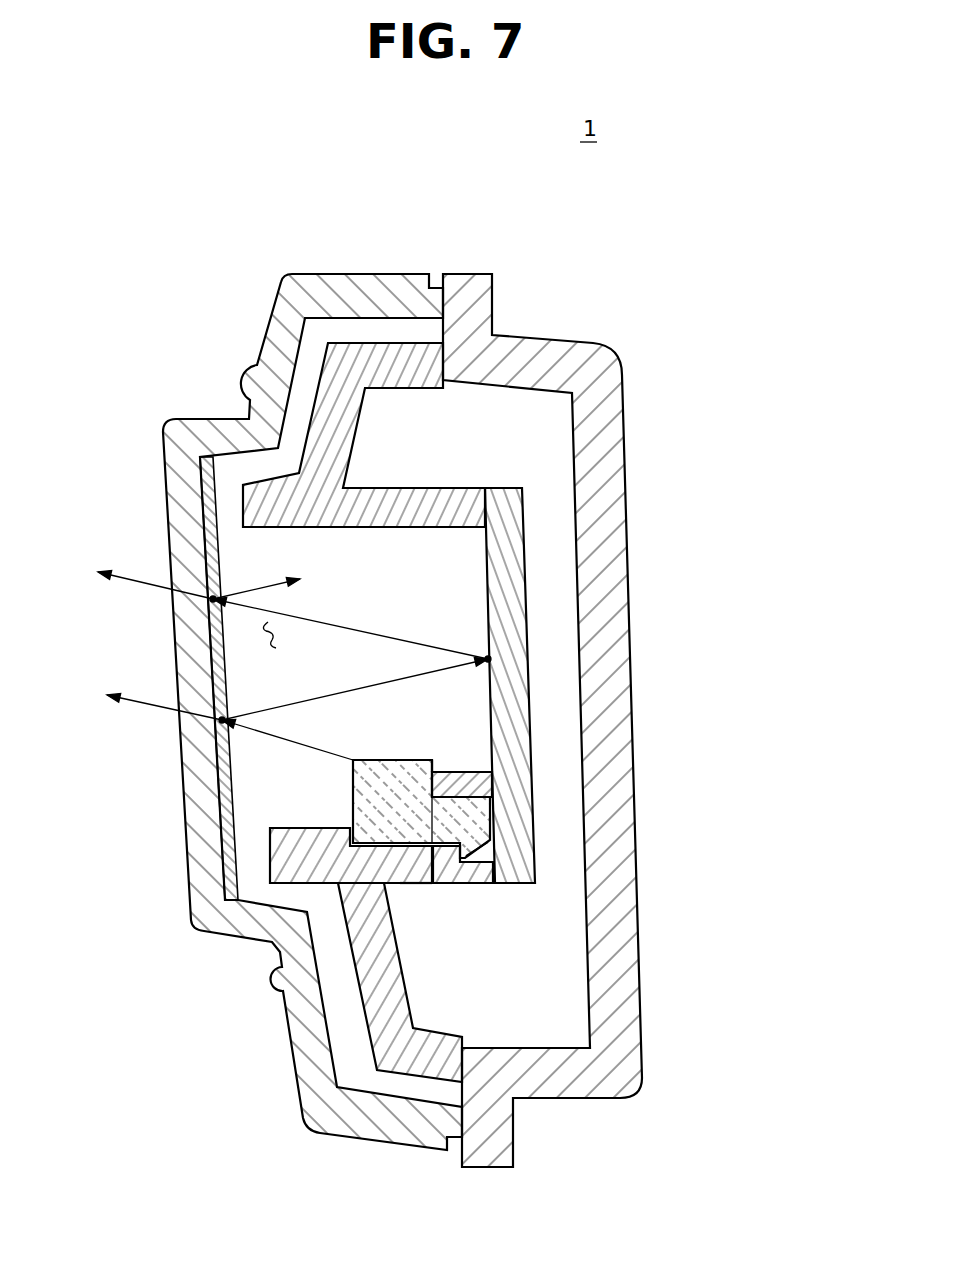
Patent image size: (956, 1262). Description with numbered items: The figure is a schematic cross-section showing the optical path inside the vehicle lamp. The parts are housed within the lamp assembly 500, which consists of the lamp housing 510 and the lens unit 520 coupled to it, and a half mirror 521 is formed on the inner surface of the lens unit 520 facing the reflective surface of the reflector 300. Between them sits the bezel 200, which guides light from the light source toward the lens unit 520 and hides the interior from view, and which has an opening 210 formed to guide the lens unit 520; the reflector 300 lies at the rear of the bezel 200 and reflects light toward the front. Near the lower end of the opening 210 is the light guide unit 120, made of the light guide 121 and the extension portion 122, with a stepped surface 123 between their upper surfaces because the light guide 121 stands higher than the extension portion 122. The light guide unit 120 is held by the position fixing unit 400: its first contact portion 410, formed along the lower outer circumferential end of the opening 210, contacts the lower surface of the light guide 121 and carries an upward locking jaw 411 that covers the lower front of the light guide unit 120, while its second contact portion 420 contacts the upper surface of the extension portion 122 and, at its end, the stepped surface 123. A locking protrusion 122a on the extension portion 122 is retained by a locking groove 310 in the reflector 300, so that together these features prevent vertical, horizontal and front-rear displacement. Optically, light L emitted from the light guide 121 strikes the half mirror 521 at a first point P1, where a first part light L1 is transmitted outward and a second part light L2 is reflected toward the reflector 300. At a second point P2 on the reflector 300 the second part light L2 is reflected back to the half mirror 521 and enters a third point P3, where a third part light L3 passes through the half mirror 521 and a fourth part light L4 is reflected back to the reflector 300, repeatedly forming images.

The lamp assembly 500 is at (545, 226).
The lamp housing 510 is at (517, 354).
The lens unit 520 is at (348, 286).
The half mirror 521 is at (208, 508).
The bezel 200 is at (337, 368).
The opening 210 is at (265, 630).
The reflector 300 is at (512, 542).
The locking groove 310 is at (412, 875).
The light guide unit 120 is at (108, 812).
The light guide 121 is at (373, 789).
The extension portion 122 is at (467, 820).
The locking protrusion 122a is at (480, 856).
The stepped surface 123 is at (434, 770).
The position fixing unit 400 is at (762, 785).
The first contact portion 410 is at (533, 880).
The locking jaw 411 is at (360, 873).
The second contact portion 420 is at (457, 783).
The light L is at (287, 745).
The first part light L1 is at (164, 696).
The second part light L2 is at (350, 658).
The third part light L3 is at (155, 575).
The fourth part light L4 is at (256, 579).
The first point P1 is at (221, 720).
The second point P2 is at (489, 659).
The third point P3 is at (212, 599).